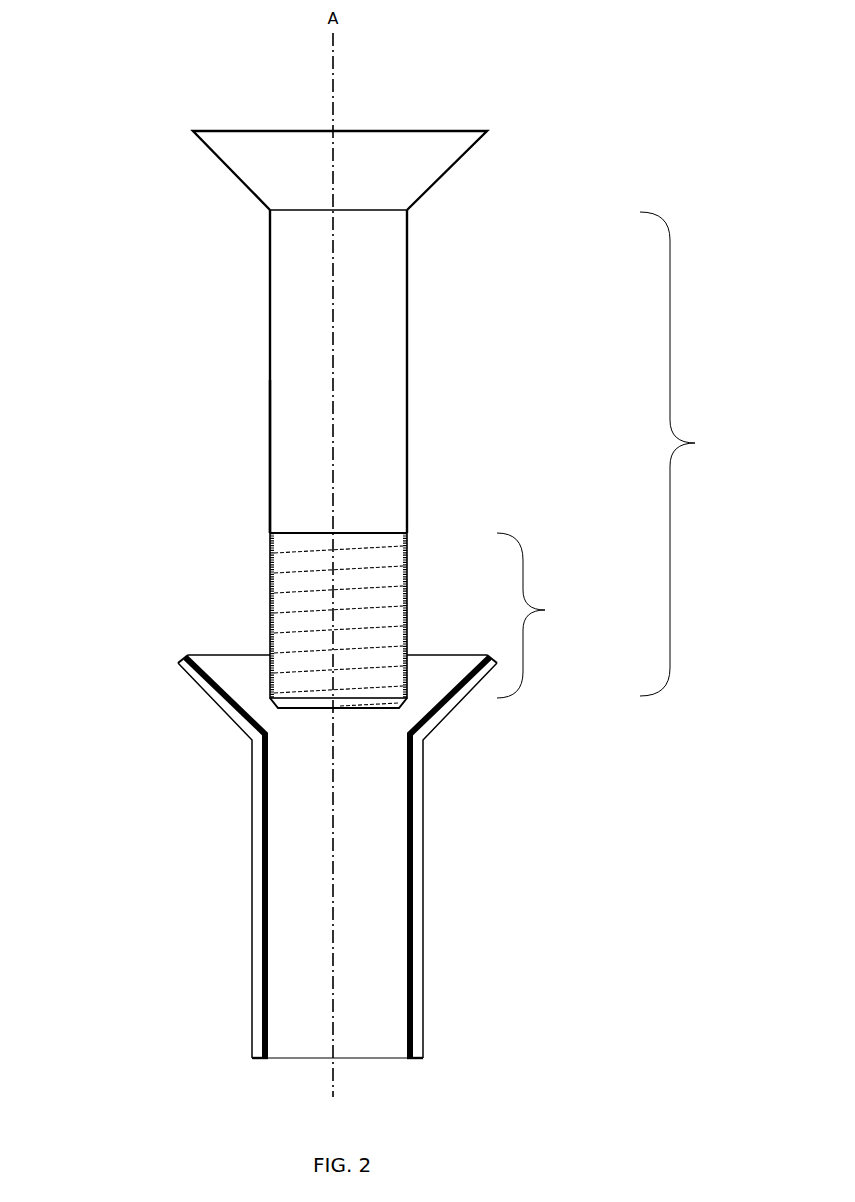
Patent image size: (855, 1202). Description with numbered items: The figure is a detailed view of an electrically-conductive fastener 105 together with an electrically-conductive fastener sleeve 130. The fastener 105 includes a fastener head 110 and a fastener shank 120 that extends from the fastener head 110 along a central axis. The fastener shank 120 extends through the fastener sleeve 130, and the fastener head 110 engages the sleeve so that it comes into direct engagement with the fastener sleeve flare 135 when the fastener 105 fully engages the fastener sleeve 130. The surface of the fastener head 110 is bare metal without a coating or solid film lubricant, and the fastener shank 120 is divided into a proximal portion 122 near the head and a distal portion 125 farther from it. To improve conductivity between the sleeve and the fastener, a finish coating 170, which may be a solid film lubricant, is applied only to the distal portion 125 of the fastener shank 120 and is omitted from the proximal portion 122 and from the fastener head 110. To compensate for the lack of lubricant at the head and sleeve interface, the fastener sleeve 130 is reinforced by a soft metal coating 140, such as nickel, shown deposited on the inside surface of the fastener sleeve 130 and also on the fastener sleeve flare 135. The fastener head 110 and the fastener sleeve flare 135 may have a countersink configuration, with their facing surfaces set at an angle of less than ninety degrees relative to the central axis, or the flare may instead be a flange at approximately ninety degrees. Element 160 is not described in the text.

The electrically-conductive fastener 105 is at (383, 353).
The fastener head 110 is at (281, 170).
The fastener shank 120 is at (690, 454).
The proximal portion 122 is at (283, 427).
The distal portion 125 is at (244, 598).
The electrically-conductive fastener sleeve 130 is at (393, 935).
The fastener sleeve flare 135 is at (282, 736).
The soft metal coating 140 is at (325, 1062).
The shoulder 160 is at (404, 489).
The finish coating 170 is at (545, 615).